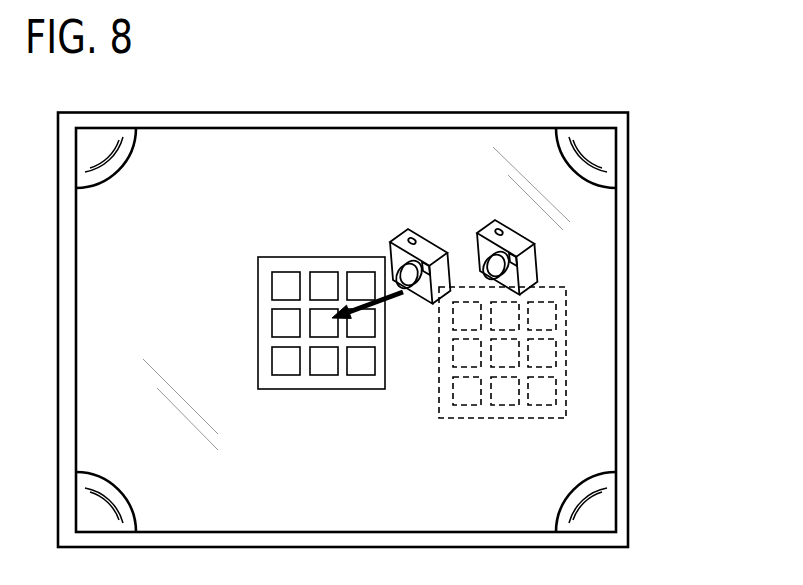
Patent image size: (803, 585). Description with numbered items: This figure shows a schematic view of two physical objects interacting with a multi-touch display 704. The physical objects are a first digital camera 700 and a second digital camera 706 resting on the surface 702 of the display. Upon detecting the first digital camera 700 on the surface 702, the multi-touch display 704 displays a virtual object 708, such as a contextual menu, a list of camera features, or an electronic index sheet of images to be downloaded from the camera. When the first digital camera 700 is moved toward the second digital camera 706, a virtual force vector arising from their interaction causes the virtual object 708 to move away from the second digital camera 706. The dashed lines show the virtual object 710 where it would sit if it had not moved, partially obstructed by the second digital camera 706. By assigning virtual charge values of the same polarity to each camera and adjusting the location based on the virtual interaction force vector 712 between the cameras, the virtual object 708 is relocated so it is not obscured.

The first digital camera 700 is at (417, 233).
The surface 702 is at (617, 344).
The multi-touch display 704 is at (628, 268).
The second digital camera 706 is at (538, 264).
The virtual object 708 is at (385, 373).
The virtual object (unmoved position, dashed) 710 is at (566, 405).
The virtual interaction force vector 712 is at (393, 302).